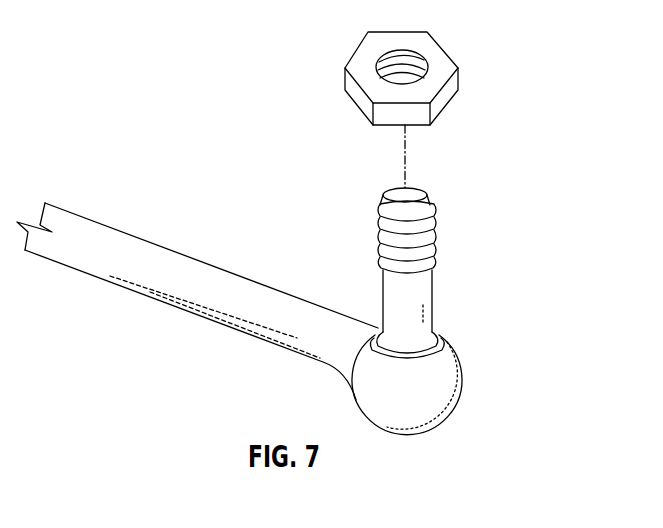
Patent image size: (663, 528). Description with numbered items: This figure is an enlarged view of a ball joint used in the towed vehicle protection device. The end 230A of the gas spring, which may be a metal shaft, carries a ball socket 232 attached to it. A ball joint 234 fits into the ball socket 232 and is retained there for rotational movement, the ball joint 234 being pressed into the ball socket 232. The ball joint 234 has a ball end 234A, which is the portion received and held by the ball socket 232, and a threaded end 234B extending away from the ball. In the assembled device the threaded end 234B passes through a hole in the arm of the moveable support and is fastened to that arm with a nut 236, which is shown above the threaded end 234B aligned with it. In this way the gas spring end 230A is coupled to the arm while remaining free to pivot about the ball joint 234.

The nut 236 is at (455, 60).
The threaded end 234B is at (420, 195).
The ball joint 234 is at (436, 292).
The ball end 234A is at (417, 333).
The ball socket 232 is at (432, 400).
The end 230A is at (110, 282).